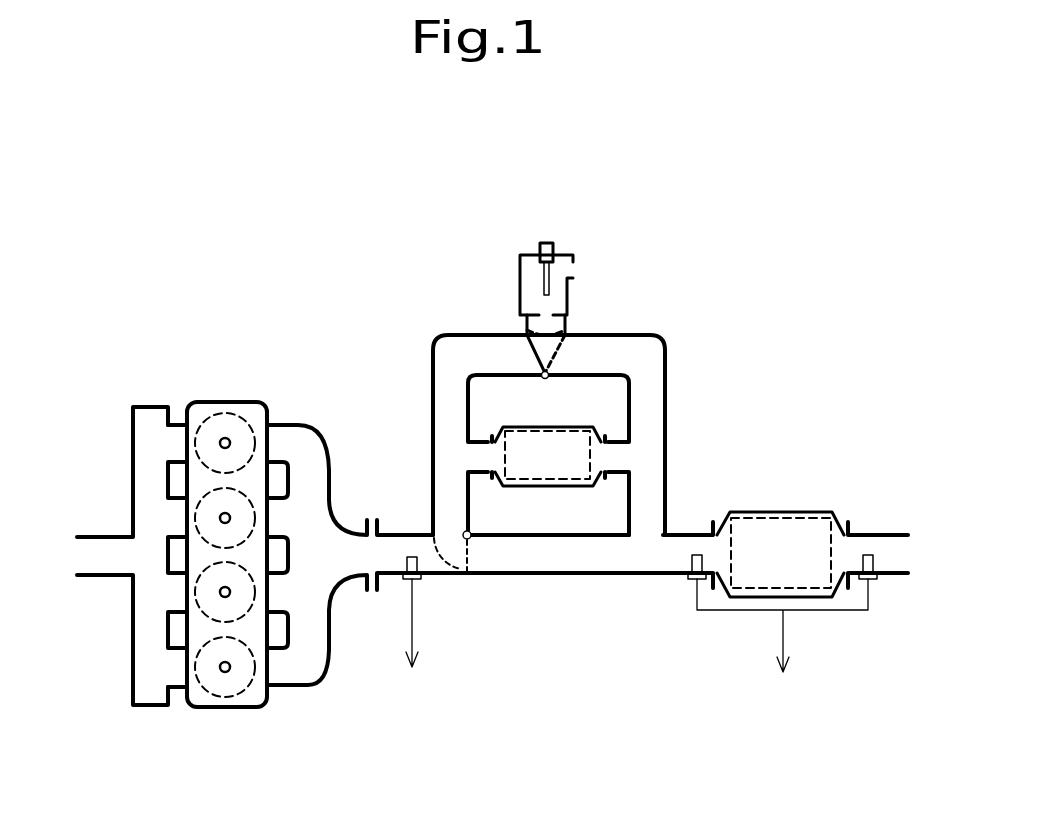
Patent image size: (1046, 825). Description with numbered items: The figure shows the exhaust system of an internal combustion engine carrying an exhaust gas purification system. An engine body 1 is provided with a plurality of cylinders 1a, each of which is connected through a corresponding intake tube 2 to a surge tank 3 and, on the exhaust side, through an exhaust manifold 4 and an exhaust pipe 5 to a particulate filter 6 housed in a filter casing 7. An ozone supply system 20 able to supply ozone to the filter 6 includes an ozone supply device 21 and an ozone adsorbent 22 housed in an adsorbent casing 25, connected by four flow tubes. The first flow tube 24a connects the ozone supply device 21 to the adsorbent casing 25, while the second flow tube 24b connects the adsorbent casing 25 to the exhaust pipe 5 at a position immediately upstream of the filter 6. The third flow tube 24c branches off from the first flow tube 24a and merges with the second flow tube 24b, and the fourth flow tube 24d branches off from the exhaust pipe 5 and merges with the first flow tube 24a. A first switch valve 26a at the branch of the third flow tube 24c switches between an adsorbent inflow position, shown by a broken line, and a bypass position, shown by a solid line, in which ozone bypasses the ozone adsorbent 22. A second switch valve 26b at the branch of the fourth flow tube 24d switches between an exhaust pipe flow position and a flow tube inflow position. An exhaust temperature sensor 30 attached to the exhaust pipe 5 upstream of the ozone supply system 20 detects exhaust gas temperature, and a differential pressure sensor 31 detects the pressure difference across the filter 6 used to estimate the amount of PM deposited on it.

The engine body 1 is at (239, 402).
The cylinder 1a is at (232, 675).
The intake tube 2 is at (175, 432).
The surge tank 3 is at (155, 418).
The exhaust manifold 4 is at (308, 448).
The exhaust pipe 5 is at (577, 576).
The particulate filter 6 is at (828, 532).
The filter casing 7 is at (787, 512).
The ozone supply system 20 is at (698, 320).
The ozone supply device 21 is at (570, 255).
The ozone adsorbent 22 is at (560, 448).
The first flow tube 24a is at (443, 383).
The second flow tube 24b is at (652, 495).
The third flow tube 24c is at (655, 393).
The fourth flow tube 24d is at (448, 499).
The adsorbent casing 25 is at (573, 486).
The first switch valve 26a is at (533, 358).
The second switch valve 26b is at (452, 535).
The exhaust temperature sensor 30 is at (418, 580).
The differential pressure sensor 31 is at (868, 610).